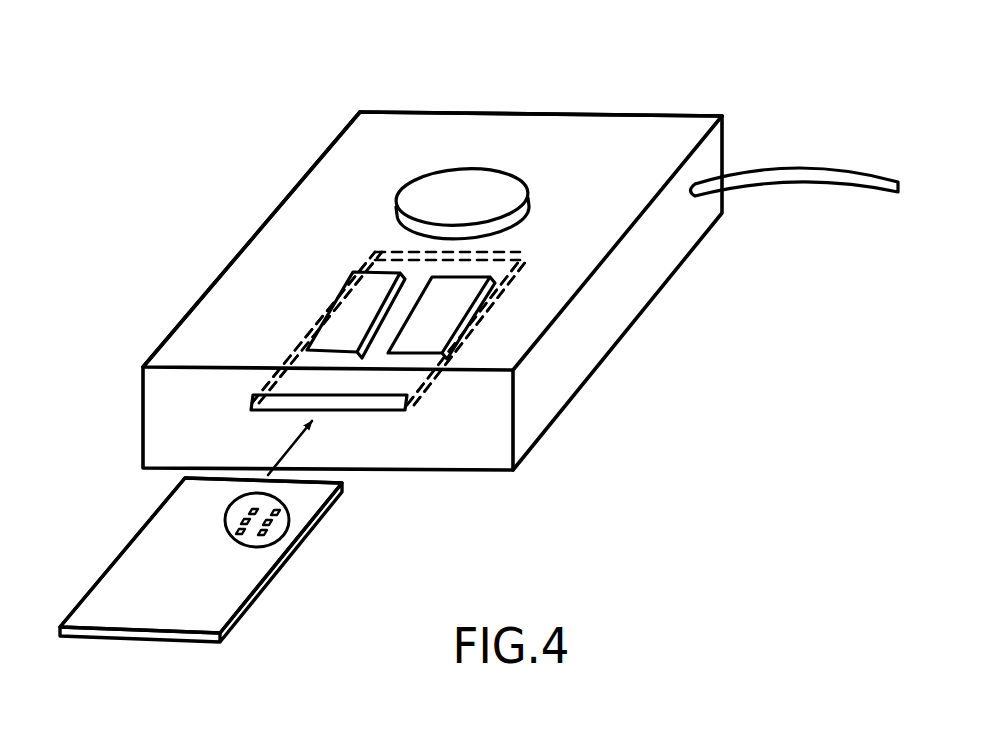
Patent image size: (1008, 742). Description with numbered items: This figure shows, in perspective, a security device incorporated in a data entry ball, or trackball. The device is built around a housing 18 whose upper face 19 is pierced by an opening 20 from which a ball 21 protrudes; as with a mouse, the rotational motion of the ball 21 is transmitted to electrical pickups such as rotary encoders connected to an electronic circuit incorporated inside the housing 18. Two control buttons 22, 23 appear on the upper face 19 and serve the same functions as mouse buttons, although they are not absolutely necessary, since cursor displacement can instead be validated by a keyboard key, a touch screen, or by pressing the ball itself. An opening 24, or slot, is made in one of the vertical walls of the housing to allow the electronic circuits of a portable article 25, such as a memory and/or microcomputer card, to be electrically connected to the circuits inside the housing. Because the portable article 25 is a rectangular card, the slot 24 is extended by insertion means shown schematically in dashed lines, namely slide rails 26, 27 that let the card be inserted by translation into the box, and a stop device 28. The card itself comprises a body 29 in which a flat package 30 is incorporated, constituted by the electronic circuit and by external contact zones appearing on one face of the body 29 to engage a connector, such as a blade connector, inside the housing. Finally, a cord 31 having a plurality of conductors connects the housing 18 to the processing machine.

The housing 18 is at (633, 275).
The upper face 19 is at (672, 142).
The opening 20 is at (523, 217).
The ball 21 is at (460, 187).
The control button 22 is at (348, 304).
The control button 23 is at (430, 334).
The opening 24 is at (405, 400).
The portable article 25 is at (288, 585).
The slide rail 26 is at (463, 327).
The slide rail 27 is at (260, 385).
The stop device 28 is at (375, 252).
The body 29 is at (132, 578).
The flat package 30 is at (290, 523).
The cord 31 is at (838, 178).